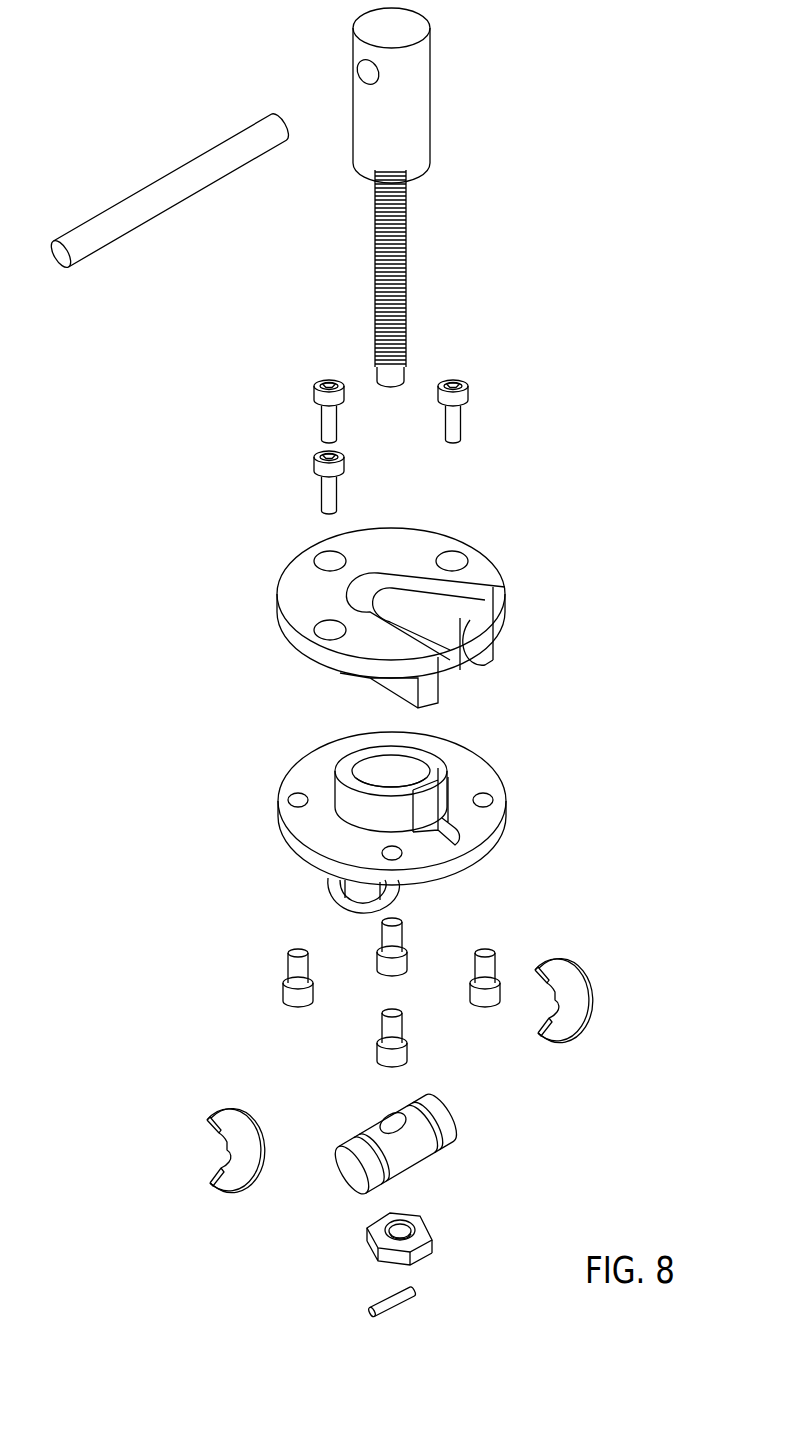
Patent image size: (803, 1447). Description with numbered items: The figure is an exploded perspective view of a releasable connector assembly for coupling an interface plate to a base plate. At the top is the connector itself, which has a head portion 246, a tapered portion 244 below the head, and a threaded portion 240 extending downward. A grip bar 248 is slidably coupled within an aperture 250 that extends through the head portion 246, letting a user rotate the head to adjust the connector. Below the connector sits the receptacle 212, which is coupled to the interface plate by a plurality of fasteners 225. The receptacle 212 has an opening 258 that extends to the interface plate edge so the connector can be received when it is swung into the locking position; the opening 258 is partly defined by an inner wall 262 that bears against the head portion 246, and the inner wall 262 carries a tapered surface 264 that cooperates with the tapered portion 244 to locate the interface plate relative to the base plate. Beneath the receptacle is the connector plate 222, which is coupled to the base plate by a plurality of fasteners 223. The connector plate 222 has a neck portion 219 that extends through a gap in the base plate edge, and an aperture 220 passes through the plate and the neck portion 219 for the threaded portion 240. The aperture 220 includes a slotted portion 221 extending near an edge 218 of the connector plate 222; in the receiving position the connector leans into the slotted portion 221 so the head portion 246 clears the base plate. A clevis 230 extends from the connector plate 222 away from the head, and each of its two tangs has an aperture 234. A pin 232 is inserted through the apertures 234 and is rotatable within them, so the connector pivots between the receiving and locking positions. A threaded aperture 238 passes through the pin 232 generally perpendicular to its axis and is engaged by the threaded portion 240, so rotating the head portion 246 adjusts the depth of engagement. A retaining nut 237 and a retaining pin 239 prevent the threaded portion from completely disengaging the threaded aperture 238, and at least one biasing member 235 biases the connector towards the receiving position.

The receptacle 212 is at (417, 618).
The edge 218 is at (384, 819).
The neck portion 219 is at (392, 777).
The aperture 220 is at (374, 752).
The slotted portion 221 is at (470, 829).
The connector plate 222 is at (473, 777).
The fasteners 223 is at (377, 1053).
The fasteners 225 is at (338, 498).
The clevis 230 is at (318, 896).
The pin 232 is at (418, 1141).
The aperture 234 is at (350, 889).
The biasing member 235 is at (592, 998).
The retaining nut 237 is at (428, 1227).
The threaded aperture 238 is at (373, 1112).
The retaining pin 239 is at (412, 1293).
The threaded portion 240 is at (406, 278).
The tapered portion 244 is at (436, 180).
The head portion 246 is at (430, 88).
The grip bar 248 is at (142, 202).
The aperture 250 is at (354, 60).
The opening 258 is at (472, 698).
The inner wall 262 is at (480, 650).
The tapered surface 264 is at (445, 633).